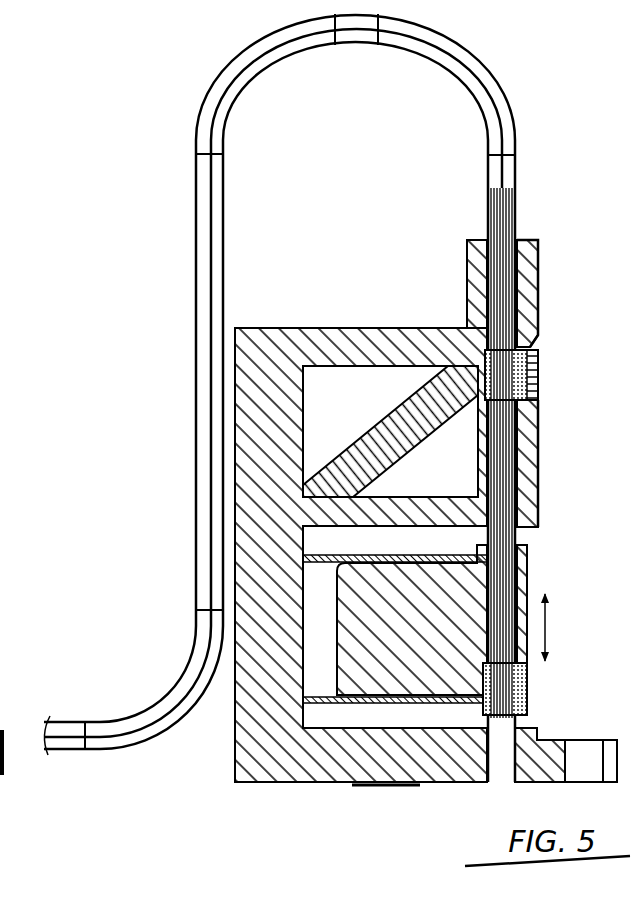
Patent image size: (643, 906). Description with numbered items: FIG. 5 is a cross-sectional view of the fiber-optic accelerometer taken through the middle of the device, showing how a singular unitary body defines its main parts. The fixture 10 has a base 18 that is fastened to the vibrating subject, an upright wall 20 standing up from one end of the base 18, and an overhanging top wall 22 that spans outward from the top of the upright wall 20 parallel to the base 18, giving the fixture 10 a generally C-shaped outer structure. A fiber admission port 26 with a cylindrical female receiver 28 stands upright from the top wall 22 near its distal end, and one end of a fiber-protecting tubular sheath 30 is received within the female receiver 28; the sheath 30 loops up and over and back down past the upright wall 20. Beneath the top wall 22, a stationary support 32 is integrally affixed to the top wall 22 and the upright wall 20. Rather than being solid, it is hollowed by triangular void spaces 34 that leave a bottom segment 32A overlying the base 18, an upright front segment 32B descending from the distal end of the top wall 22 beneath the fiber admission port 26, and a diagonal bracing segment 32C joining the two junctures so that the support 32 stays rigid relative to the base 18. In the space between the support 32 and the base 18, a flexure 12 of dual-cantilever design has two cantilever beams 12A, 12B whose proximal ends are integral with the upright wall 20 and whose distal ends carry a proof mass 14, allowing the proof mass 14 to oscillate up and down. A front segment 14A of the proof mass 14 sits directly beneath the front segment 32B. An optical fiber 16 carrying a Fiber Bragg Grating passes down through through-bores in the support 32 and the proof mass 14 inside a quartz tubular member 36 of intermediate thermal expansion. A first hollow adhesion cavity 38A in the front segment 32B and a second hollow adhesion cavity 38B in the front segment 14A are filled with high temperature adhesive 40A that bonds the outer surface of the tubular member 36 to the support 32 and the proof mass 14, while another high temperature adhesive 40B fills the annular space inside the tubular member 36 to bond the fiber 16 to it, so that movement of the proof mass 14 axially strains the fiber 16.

The fixture 10 is at (287, 322).
The flexure 12 is at (345, 710).
The cantilever beam 12A is at (407, 708).
The cantilever beam 12B is at (353, 556).
The proof mass 14 is at (345, 654).
The front segment of the proof mass 14A is at (520, 590).
The optical fiber 16 is at (503, 178).
The base 18 is at (583, 750).
The upright wall 20 is at (248, 490).
The overhanging top wall 22 is at (340, 336).
The fiber admission port 26 is at (542, 249).
The cylindrical female receiver 28 is at (530, 292).
The fiber-protecting tubular sheath 30 is at (502, 90).
The stationary support 32 is at (531, 457).
The bottom segment 32A is at (461, 452).
The upright front segment 32B is at (533, 498).
The diagonal bracing segment 32C is at (352, 455).
The triangular void spaces 34 is at (393, 380).
The tubular member 36 is at (512, 215).
The first hollow adhesion cavity 38A is at (532, 368).
The second hollow adhesion cavity 38B is at (526, 683).
The high temperature adhesive 40A is at (528, 391).
The high temperature adhesive 40B is at (487, 223).